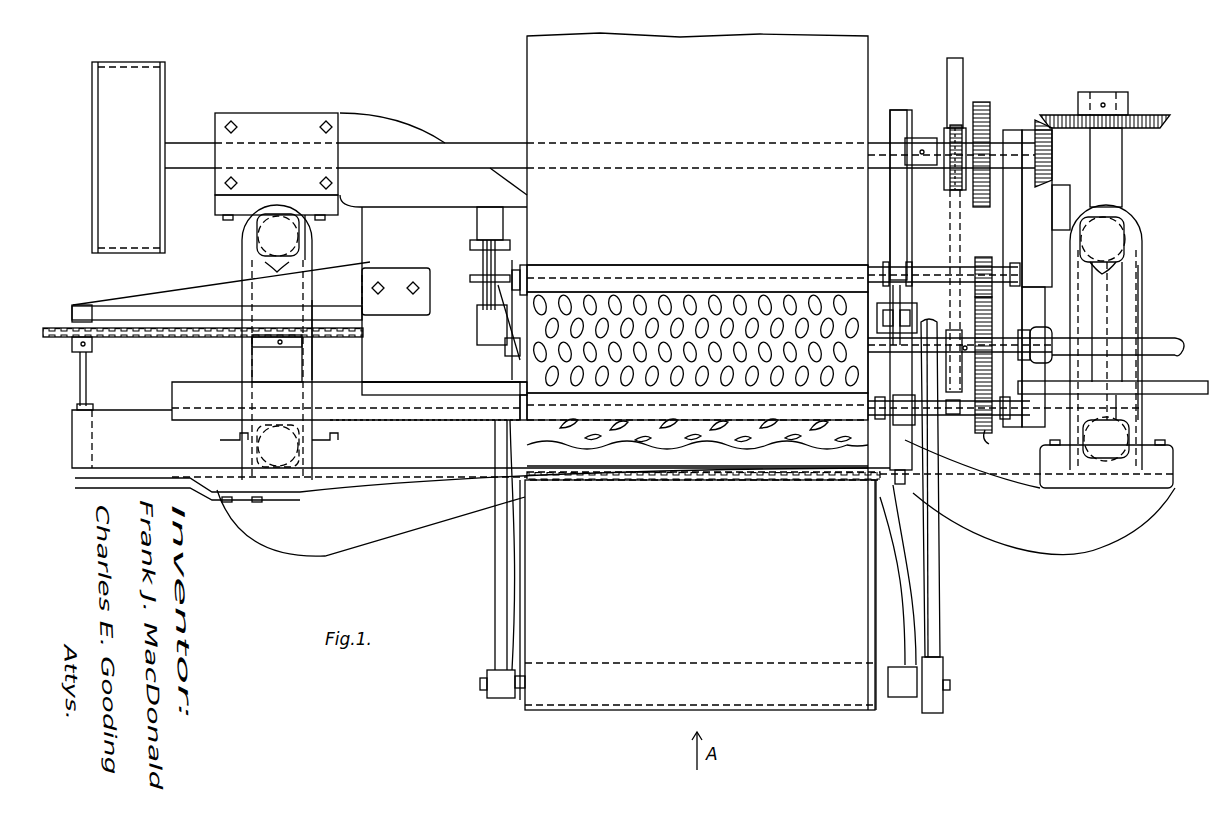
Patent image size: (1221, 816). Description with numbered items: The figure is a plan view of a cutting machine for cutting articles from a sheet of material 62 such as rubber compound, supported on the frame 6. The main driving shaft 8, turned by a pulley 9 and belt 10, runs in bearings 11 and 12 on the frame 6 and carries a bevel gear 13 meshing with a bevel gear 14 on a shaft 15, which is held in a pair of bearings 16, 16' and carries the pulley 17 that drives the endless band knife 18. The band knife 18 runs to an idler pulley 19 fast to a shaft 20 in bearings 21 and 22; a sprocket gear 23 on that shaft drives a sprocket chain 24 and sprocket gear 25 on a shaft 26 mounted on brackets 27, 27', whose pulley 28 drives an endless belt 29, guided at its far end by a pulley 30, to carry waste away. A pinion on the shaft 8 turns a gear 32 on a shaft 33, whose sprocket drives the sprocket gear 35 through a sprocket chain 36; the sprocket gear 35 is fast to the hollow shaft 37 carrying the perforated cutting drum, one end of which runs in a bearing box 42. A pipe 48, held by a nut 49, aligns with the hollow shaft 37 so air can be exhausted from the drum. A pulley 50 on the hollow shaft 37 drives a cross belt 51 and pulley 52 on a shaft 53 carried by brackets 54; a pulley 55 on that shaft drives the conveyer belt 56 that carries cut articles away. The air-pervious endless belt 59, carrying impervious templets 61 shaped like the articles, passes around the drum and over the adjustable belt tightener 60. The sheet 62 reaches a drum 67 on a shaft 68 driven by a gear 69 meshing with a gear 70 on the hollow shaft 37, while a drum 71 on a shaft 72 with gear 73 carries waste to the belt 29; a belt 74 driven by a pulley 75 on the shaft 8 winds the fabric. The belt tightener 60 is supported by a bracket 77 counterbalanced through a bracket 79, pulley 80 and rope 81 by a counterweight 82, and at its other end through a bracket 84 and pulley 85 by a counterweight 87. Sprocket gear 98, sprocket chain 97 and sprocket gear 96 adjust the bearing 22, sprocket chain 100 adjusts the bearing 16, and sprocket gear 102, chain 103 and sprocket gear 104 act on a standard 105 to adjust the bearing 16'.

The frame 6 is at (1090, 565).
The main driving shaft 8 is at (490, 150).
The pulley 9 is at (168, 130).
The belt 10 is at (150, 233).
The bearing 11 is at (316, 120).
The bearing 12 is at (892, 110).
The bevel gear 13 is at (1052, 168).
The bevel gear 14 is at (1150, 120).
The shaft 15 is at (1120, 152).
The bearing 16 is at (1138, 466).
The bearing 16' is at (1127, 337).
The pulley 17 is at (1173, 455).
The endless band knife 18 is at (425, 395).
The pulley 19 is at (172, 395).
The shaft 20 is at (293, 368).
The bearing 21 is at (330, 455).
The bearing 22 is at (255, 240).
The sprocket gear 23 is at (258, 340).
The sprocket chain 24 is at (188, 338).
The sprocket gear 25 is at (78, 327).
The shaft 26 is at (88, 378).
The bracket 27 is at (471, 497).
The bracket 27' is at (221, 291).
The pulley 28 is at (93, 406).
The endless belt 29 is at (481, 443).
The pulley 30 is at (886, 510).
The gear 32 is at (990, 105).
The shaft 33 is at (926, 138).
The sprocket gear 35 is at (944, 175).
The sprocket chain 36 is at (962, 222).
The hollow shaft 37 is at (948, 310).
The bearing box 42 is at (505, 340).
The pipe 48 is at (1160, 338).
The nut 49 is at (1040, 345).
The pulley 50 is at (892, 430).
The cross belt 51 is at (952, 575).
The pulley 52 is at (943, 665).
The shaft 53 is at (484, 688).
The bracket 54 is at (503, 698).
The pulley 55 is at (880, 712).
The conveyer belt 56 is at (697, 595).
The endless belt 59 is at (538, 300).
The belt tightener 60 is at (518, 396).
The templets 61 is at (650, 300).
The sheet of material 62 is at (697, 149).
The drum 67 is at (525, 272).
The shaft 68 is at (516, 260).
The gear 69 is at (984, 258).
The gear 70 is at (992, 318).
The drum 71 is at (812, 450).
The shaft 72 is at (496, 450).
The gear 73 is at (990, 444).
The belt 74 is at (955, 58).
The pulley 75 is at (965, 130).
The bracket 77 is at (478, 318).
The bracket 79 is at (470, 252).
The pulley 80 is at (470, 280).
The rope 81 is at (484, 300).
The counterweight 82 is at (476, 227).
The bracket 84 is at (880, 305).
The pulley 85 is at (910, 262).
The counterweight 87 is at (886, 262).
The sprocket gear 96 is at (312, 262).
The sprocket chain 97 is at (315, 352).
The sprocket gear 98 is at (240, 437).
The sprocket chain 100 is at (660, 480).
The sprocket gear 102 is at (1116, 390).
The chain 103 is at (1142, 300).
The sprocket gear 104 is at (1104, 295).
The standard 105 is at (1128, 230).